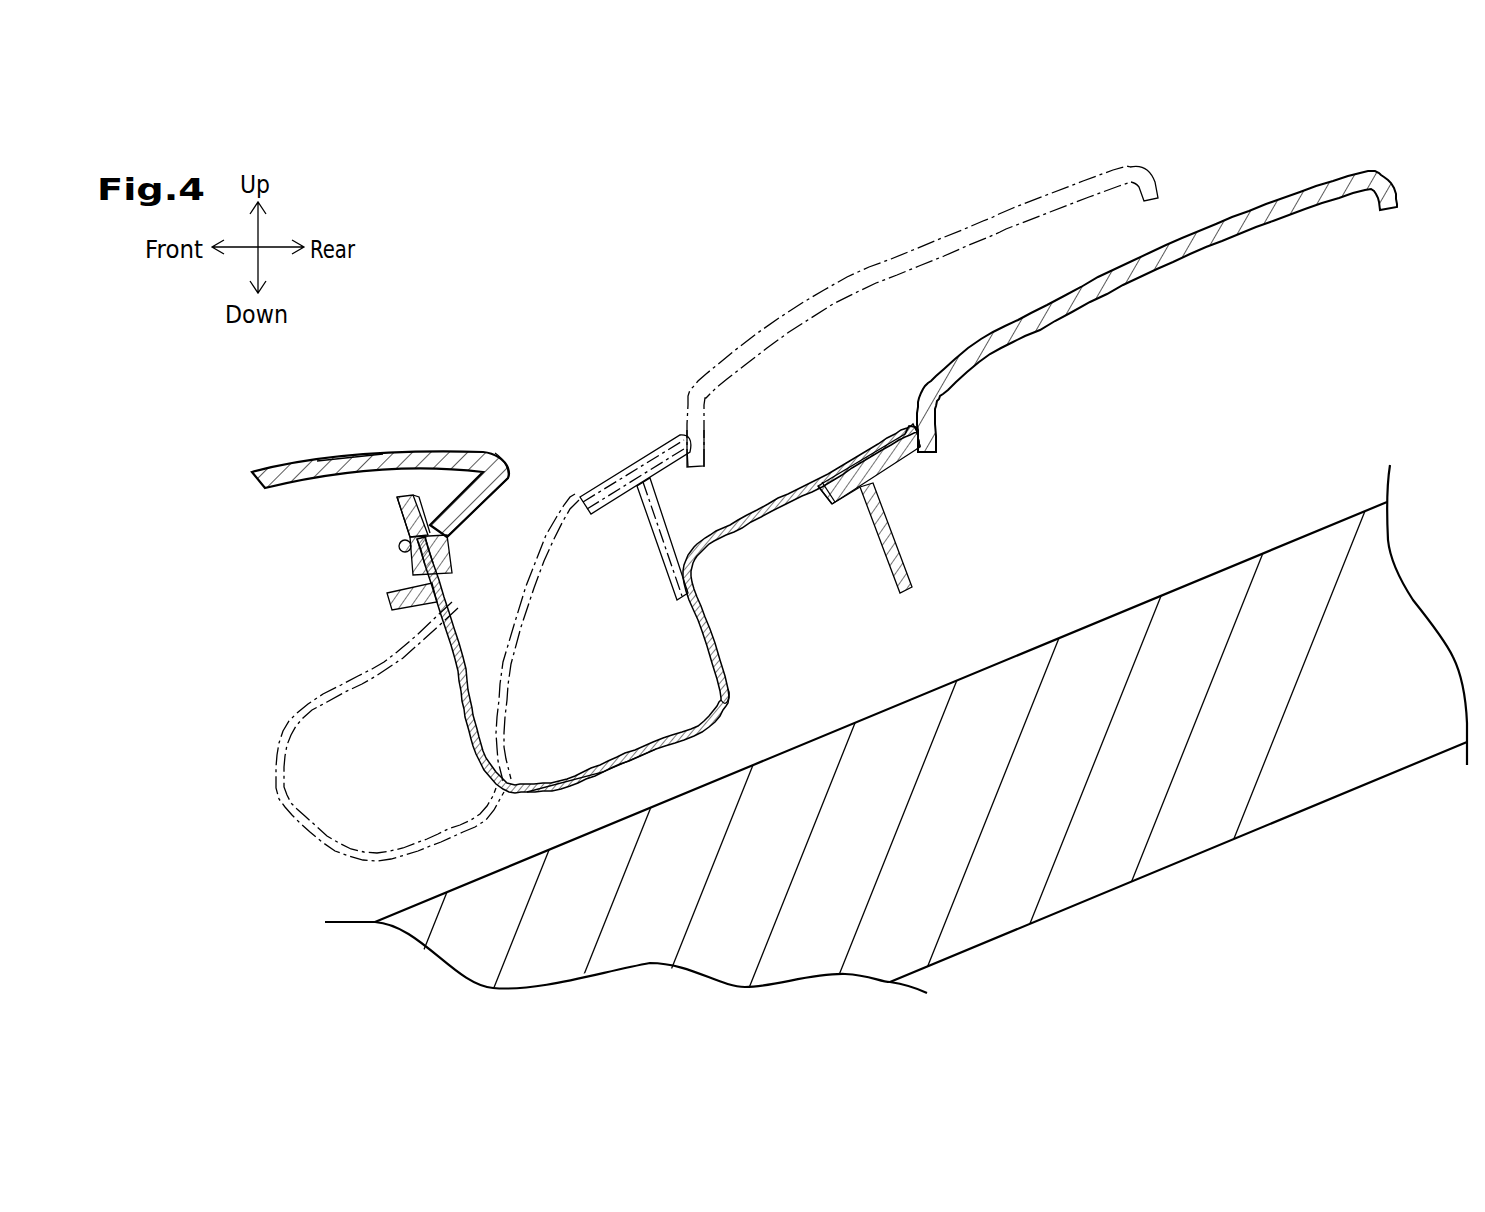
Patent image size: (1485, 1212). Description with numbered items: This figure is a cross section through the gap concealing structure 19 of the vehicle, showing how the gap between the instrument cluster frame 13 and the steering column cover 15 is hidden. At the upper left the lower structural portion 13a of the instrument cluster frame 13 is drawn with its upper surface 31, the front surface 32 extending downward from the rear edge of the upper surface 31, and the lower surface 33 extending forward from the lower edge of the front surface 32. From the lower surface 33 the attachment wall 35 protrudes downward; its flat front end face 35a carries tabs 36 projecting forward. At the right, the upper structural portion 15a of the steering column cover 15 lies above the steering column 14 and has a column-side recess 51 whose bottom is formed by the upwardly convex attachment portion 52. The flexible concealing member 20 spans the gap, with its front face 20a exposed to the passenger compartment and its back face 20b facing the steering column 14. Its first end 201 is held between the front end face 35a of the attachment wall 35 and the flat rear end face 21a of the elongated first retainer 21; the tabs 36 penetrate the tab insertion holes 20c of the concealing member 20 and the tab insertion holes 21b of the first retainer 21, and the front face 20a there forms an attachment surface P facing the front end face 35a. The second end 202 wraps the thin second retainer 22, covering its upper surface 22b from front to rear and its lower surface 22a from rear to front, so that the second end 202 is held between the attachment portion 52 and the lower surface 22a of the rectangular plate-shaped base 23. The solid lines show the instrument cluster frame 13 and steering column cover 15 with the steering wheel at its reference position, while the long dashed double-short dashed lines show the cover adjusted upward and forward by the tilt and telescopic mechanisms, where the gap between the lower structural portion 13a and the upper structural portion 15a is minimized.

The instrument cluster frame 13 is at (413, 446).
The lower structural portion 13a is at (310, 460).
The steering column 14 is at (1233, 566).
The steering column cover 15 is at (1042, 297).
The upper structural portion 15a is at (910, 250).
The gap concealing structure 19 is at (637, 381).
The concealing member 20 is at (728, 537).
The front face 20a is at (620, 753).
The back face 20b is at (726, 695).
The tab insertion holes 20c is at (433, 527).
The first end 201 is at (423, 540).
The second end 202 is at (883, 445).
The first retainer 21 is at (427, 633).
The rear end face 21a is at (412, 496).
The tab insertion holes 21b is at (403, 540).
The second retainer 22 is at (868, 467).
The lower surface 22a is at (837, 500).
The upper surface 22b is at (827, 470).
The base 23 is at (880, 487).
The upper surface 31 is at (383, 453).
The front surface 32 is at (512, 478).
The lower surface 33 is at (480, 519).
The attachment wall 35 is at (452, 562).
The front end face 35a is at (413, 565).
The tabs 36 is at (399, 548).
The column-side recess 51 is at (830, 503).
The attachment portion 52 is at (913, 460).
The attachment surface P is at (400, 590).